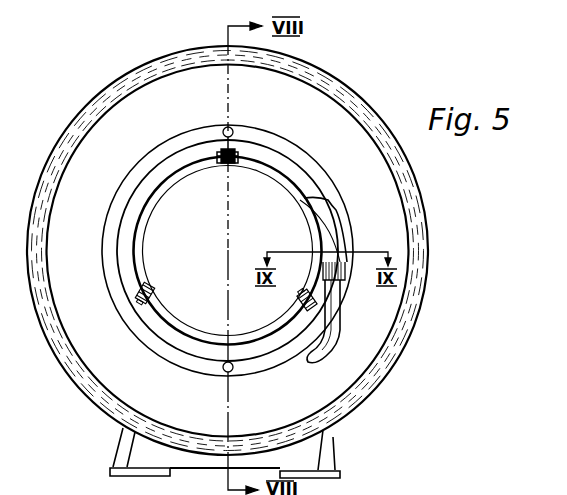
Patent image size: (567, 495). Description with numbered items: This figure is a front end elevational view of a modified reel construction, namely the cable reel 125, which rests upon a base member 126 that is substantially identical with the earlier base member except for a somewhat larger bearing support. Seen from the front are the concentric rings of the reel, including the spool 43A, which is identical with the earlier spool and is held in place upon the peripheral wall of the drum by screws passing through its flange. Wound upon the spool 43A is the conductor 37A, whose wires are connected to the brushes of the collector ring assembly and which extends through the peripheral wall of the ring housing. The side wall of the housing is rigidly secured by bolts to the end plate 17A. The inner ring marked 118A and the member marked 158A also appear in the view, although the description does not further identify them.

The cable reel 125 is at (432, 211).
The spool 43A is at (377, 105).
The inner clamp ring 118A is at (228, 251).
The conductor 37A is at (329, 333).
The end plate 17A is at (222, 452).
The base member 126 is at (304, 483).
The support member 158A is at (394, 486).